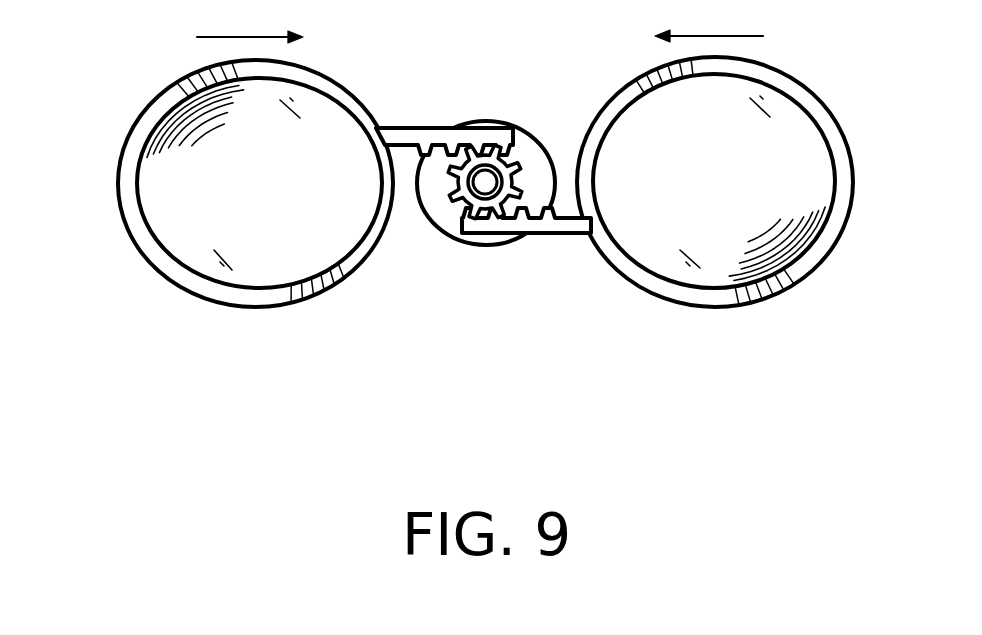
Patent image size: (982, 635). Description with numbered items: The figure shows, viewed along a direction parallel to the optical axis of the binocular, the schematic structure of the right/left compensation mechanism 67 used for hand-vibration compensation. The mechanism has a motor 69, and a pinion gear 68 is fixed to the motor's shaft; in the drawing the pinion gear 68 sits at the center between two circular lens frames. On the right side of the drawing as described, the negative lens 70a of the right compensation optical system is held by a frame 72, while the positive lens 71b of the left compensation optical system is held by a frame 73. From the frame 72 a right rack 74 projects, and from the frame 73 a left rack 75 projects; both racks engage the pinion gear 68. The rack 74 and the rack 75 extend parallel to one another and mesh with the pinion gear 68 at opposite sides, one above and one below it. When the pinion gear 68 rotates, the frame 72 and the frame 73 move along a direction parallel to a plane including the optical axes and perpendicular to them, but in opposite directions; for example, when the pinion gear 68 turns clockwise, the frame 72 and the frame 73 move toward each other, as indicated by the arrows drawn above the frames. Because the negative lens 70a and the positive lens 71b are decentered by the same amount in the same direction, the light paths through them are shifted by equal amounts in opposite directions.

The right/left compensation mechanism 67 is at (583, 313).
The pinion gear 68 is at (518, 130).
The motor 69 is at (437, 227).
The negative lens 70a is at (263, 250).
The positive lens 71b is at (720, 247).
The frame 72 is at (168, 95).
The frame 73 is at (800, 93).
The right rack 74 is at (465, 132).
The left rack 75 is at (535, 235).